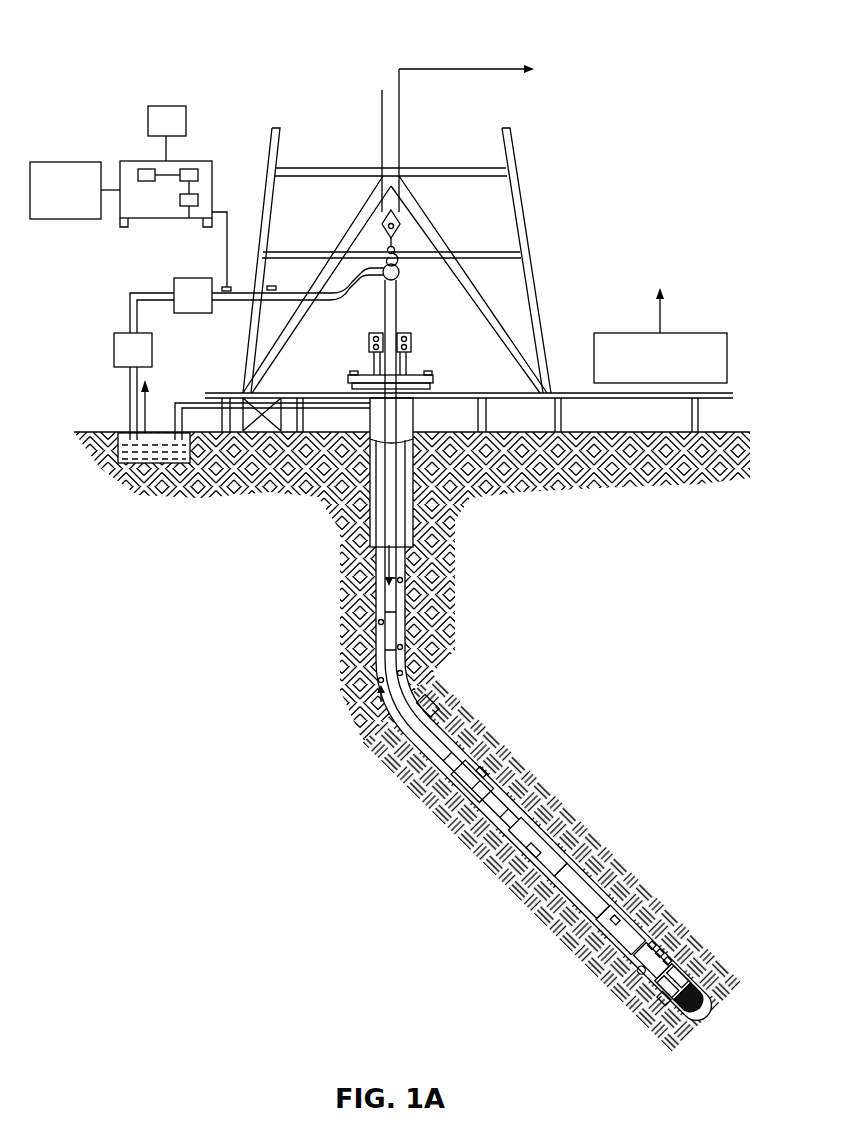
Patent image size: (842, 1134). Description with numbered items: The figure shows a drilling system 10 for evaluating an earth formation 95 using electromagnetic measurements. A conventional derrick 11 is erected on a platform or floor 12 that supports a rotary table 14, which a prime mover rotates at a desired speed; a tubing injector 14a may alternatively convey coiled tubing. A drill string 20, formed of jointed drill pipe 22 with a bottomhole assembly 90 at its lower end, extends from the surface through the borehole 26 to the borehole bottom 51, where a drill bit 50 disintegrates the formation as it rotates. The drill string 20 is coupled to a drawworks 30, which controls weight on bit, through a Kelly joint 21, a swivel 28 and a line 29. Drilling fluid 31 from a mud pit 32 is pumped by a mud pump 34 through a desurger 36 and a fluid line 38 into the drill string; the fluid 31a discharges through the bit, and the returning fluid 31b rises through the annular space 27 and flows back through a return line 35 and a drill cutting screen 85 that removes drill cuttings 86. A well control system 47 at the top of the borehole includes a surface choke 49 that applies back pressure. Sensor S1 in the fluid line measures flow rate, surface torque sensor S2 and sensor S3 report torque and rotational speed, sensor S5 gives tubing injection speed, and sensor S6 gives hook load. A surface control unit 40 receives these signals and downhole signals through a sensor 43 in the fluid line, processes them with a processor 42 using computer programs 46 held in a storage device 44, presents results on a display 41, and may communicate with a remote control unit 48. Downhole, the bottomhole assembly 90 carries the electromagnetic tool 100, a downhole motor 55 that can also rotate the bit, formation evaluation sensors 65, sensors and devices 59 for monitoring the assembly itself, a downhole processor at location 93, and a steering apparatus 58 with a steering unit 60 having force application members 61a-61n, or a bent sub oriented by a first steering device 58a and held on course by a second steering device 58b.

The drilling system 10 is at (103, 37).
The derrick 11 is at (533, 265).
The platform or floor 12 is at (549, 390).
The rotary table 14 is at (416, 372).
The tubing injector 14a is at (413, 343).
The drill string 20 is at (405, 619).
The Kelly joint 21 is at (399, 318).
The drill pipe 22 is at (372, 603).
The borehole 26 is at (413, 678).
The annular space 27 is at (450, 717).
The swivel 28 is at (378, 278).
The line 29 is at (401, 151).
The drawworks 30 is at (689, 333).
The drilling fluid 31 is at (118, 440).
The drilling fluid from the drilling tubular 31a is at (381, 560).
The returning drilling fluid 31b is at (374, 712).
The mud pit 32 is at (135, 460).
The mud pump 34 is at (114, 350).
The return line 35 is at (318, 413).
The desurger 36 is at (174, 290).
The fluid line 38 is at (242, 303).
The surface control unit 40 is at (154, 161).
The display/monitor 41 is at (166, 106).
The processor 42 is at (145, 169).
The sensor 43 is at (226, 286).
The storage device 44 is at (194, 169).
The computer programs 46 is at (189, 206).
The well control system 47 is at (352, 339).
The remote control unit 48 is at (88, 162).
The surface choke 49 is at (450, 485).
The drill bit 50 is at (704, 984).
The borehole bottom 51 is at (682, 1022).
The downhole motor 55 is at (498, 775).
The steering apparatus 58 is at (700, 965).
The first steering device 58a is at (690, 950).
The second steering device 58b is at (650, 1000).
The sensors and devices 59 is at (660, 1012).
The steering unit 60 is at (630, 975).
The force application members 61a-61n is at (660, 940).
The formation evaluation sensors 65 is at (540, 905).
The drill cutting screen 85 is at (262, 398).
The drill cuttings 86 is at (408, 577).
The bottomhole assembly 90 is at (588, 758).
The downhole processor location 93 is at (507, 866).
The earth formation 95 is at (678, 816).
The electromagnetic tool 100 is at (620, 880).
The flow rate sensor S1 is at (271, 285).
The surface torque sensor S2 is at (435, 378).
The rotational speed sensor S3 is at (349, 377).
The tubing injection speed sensor S5 is at (399, 292).
The hook load sensor S6 is at (399, 261).